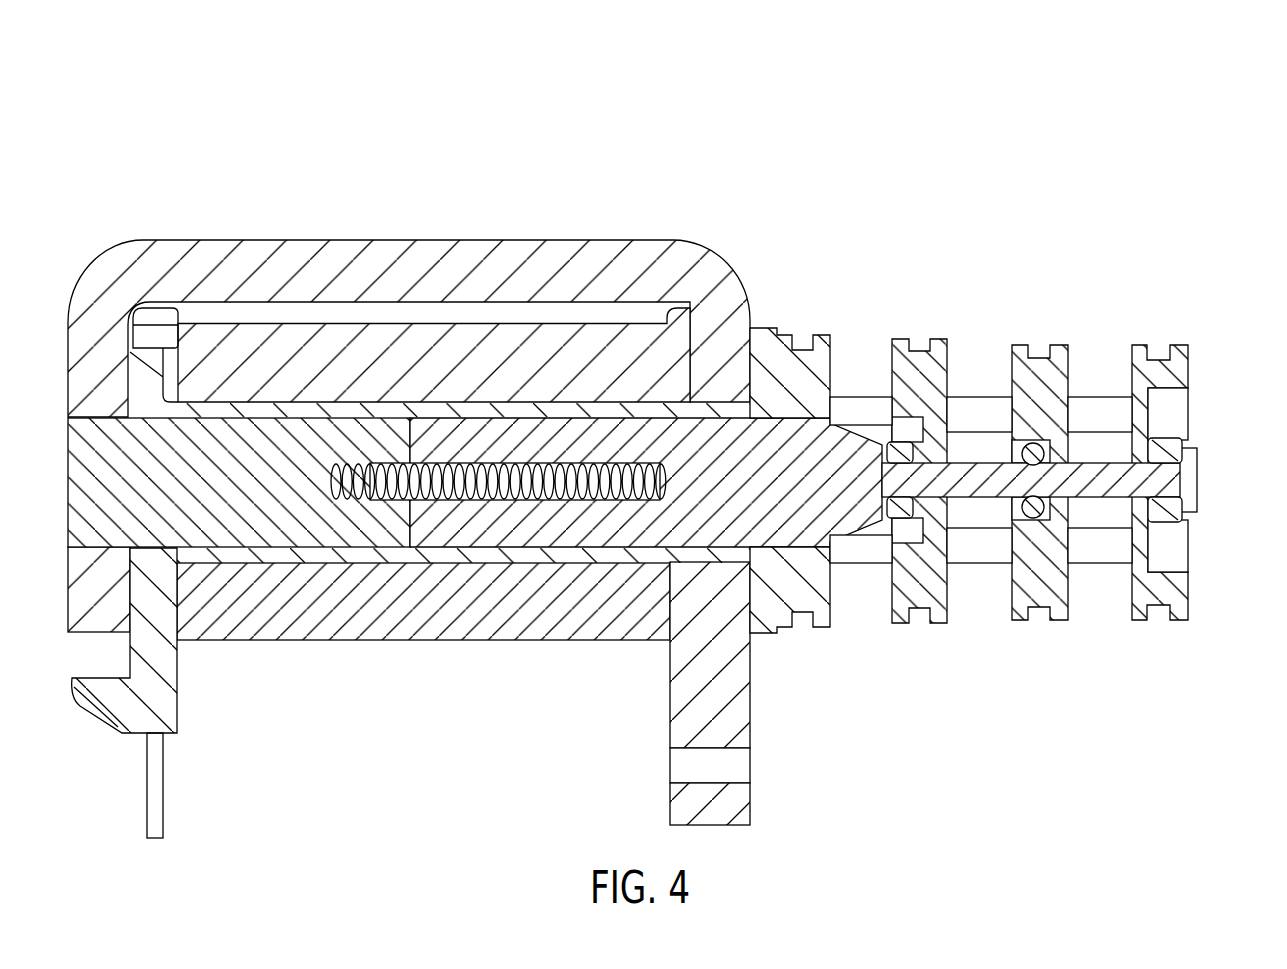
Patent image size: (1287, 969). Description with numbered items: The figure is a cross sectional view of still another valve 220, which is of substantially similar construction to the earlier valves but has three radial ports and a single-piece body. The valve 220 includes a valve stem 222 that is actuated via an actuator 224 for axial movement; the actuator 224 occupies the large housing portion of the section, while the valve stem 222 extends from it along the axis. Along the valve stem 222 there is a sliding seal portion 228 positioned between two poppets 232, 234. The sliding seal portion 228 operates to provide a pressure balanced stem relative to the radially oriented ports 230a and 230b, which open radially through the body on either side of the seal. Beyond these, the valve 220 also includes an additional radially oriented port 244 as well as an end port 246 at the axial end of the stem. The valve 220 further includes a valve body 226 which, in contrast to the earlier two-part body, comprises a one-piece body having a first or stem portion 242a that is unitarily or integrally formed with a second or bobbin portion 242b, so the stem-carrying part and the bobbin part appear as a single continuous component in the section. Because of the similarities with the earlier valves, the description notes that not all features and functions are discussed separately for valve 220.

The valve 220 is at (673, 440).
The valve stem 222 is at (969, 446).
The actuator 224 is at (358, 688).
The valve body 226 is at (780, 315).
The sliding seal portion 228 is at (1061, 509).
The radially oriented port 230a is at (1103, 515).
The radially oriented port 230b is at (981, 515).
The poppet 232 is at (1129, 467).
The poppet 234 is at (924, 448).
The stem portion 242a is at (1192, 585).
The bobbin portion 242b is at (167, 657).
The radially oriented port 244 is at (862, 372).
The end port 246 is at (1168, 553).